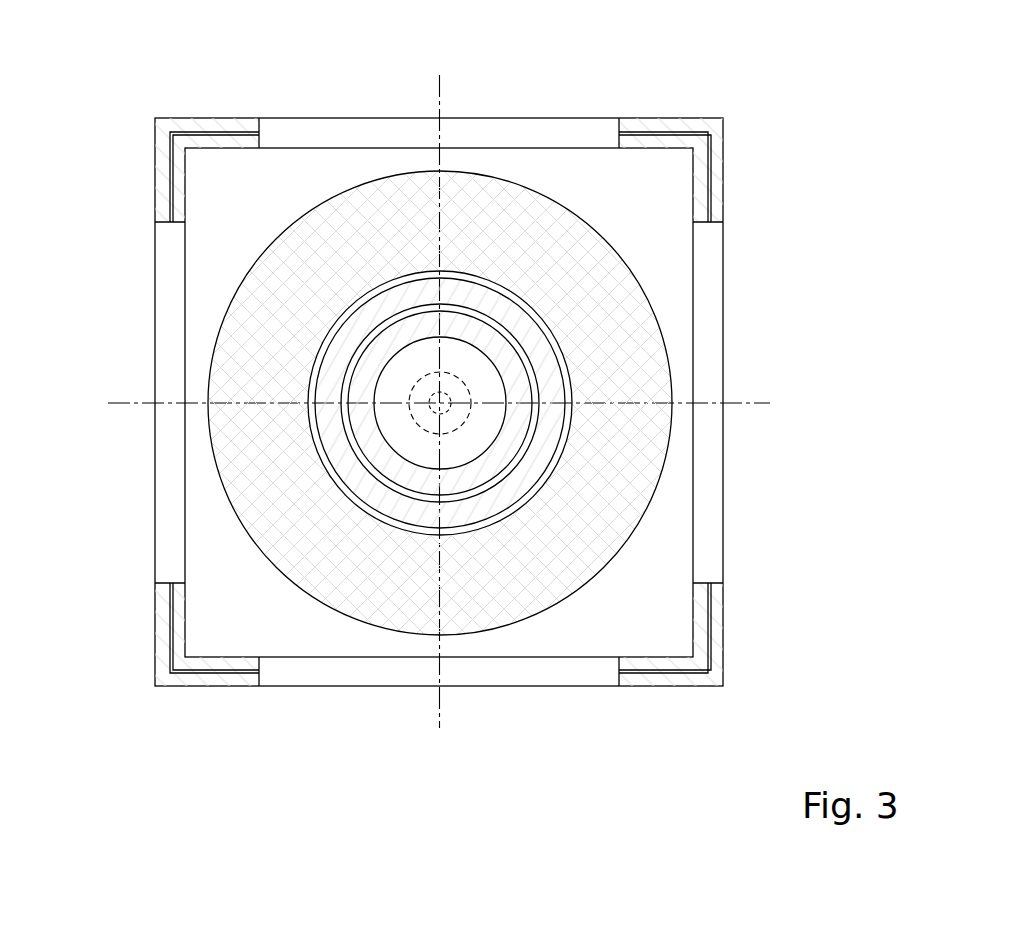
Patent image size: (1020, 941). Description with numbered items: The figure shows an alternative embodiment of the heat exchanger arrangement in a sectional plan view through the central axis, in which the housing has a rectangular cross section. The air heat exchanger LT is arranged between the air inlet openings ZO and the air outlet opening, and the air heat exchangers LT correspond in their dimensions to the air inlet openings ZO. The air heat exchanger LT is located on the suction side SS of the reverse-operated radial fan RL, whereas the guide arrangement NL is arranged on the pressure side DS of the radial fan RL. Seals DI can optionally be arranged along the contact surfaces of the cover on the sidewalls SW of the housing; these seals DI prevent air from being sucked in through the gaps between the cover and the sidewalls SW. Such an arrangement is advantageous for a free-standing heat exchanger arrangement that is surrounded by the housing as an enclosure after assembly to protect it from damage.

The sidewalls SW is at (170, 118).
The seals DI is at (660, 128).
The air inlet openings ZO is at (385, 138).
The air heat exchanger LT is at (617, 311).
The radial fan RL is at (343, 345).
The guide arrangement NL is at (483, 343).
The pressure side DS is at (432, 391).
The suction side SS is at (664, 624).